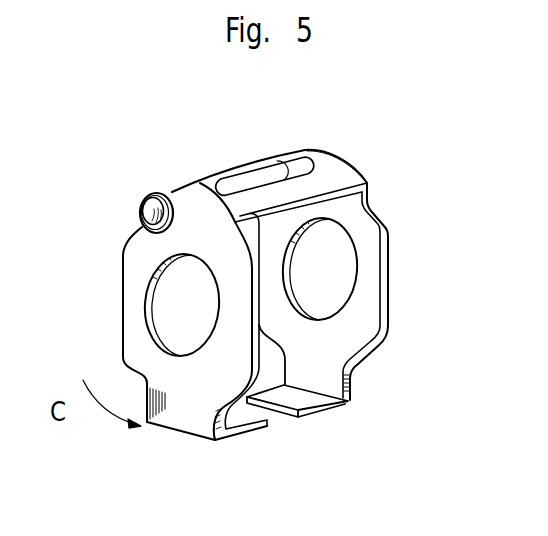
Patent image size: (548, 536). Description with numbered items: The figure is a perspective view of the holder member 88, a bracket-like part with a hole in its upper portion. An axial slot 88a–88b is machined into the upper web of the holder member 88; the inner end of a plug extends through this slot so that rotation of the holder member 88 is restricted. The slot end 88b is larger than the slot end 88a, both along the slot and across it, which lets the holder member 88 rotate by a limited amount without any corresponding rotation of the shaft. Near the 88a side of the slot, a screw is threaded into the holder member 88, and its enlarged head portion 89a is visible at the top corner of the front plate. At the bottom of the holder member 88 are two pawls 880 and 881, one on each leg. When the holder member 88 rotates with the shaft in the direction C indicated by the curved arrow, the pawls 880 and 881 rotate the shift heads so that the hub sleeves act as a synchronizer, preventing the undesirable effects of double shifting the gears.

The holder member 88 is at (278, 295).
The slot end 88a is at (230, 177).
The slot end 88b is at (331, 176).
The head portion 89a is at (143, 194).
The pawl 880 is at (322, 414).
The pawl 881 is at (250, 428).